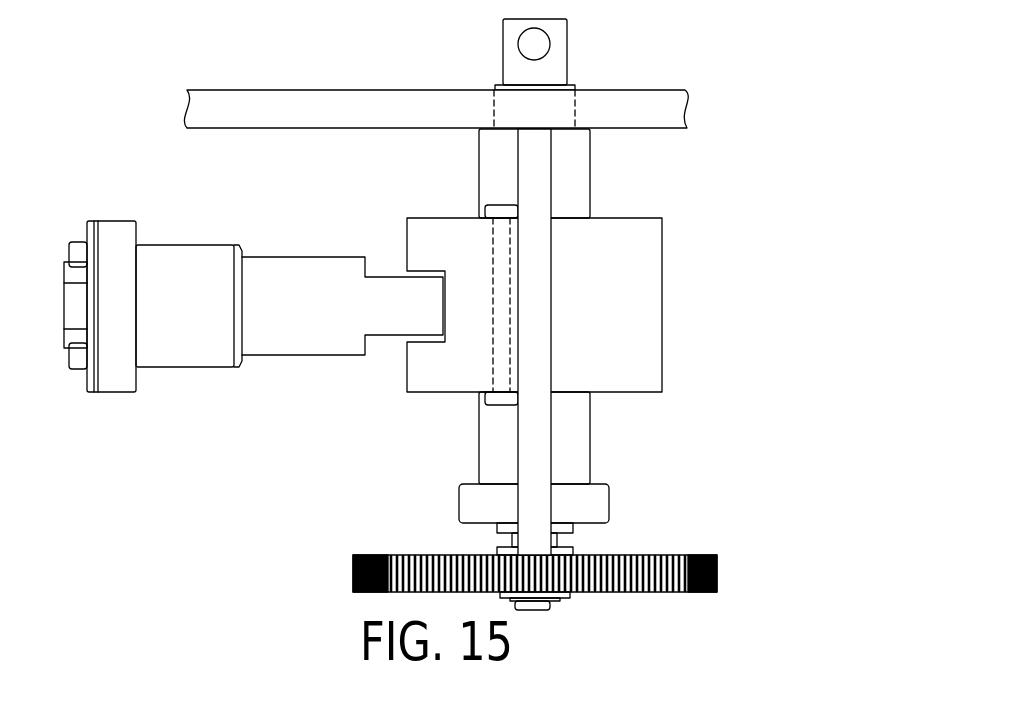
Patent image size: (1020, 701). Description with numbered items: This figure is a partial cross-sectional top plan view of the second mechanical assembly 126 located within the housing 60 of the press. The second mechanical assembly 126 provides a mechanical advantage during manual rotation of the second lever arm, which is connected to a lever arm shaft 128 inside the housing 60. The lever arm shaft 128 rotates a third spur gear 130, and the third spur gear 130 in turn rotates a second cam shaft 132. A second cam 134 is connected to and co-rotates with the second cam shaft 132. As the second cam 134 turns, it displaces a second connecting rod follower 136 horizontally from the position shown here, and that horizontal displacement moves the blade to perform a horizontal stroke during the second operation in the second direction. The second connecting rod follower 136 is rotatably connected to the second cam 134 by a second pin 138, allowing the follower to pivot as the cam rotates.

The housing 60 is at (307, 102).
The second mechanical assembly 126 is at (744, 169).
The lever arm shaft 128 is at (535, 185).
The third spur gear 130 is at (682, 555).
The second cam shaft 132 is at (590, 440).
The second cam 134 is at (625, 395).
The second connecting rod follower 136 is at (322, 343).
The second pin 138 is at (490, 366).